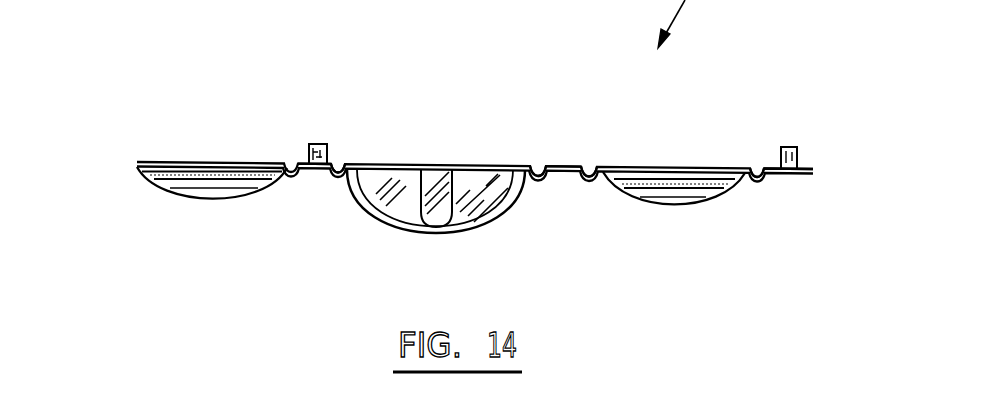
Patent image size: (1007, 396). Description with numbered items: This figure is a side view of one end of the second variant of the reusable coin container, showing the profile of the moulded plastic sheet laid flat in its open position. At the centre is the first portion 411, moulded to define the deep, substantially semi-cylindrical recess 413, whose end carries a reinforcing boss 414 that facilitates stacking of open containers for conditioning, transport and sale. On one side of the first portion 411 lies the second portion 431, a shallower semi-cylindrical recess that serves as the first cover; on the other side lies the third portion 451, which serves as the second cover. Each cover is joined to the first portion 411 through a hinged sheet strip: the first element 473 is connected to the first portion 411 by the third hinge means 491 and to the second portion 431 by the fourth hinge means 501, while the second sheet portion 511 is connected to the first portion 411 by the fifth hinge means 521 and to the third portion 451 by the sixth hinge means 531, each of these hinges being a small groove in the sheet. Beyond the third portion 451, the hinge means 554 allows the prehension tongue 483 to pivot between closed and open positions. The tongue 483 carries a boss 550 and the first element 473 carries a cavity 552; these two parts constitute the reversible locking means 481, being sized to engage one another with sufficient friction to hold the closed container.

The first portion 411 is at (488, 205).
The recess 413 is at (436, 172).
The reinforcing boss 414 is at (437, 218).
The second portion 431 is at (151, 176).
The third portion 451 is at (633, 177).
The first element 473 is at (317, 172).
The reversible locking means 481 is at (192, 187).
The prehension tongue 483 is at (820, 180).
The third hinge means 491 is at (342, 178).
The fourth hinge means 501 is at (293, 173).
The second sheet portion 511 is at (565, 177).
The fifth hinge means 521 is at (538, 167).
The sixth hinge means 531 is at (592, 167).
The boss 550 is at (790, 146).
The cavity 552 is at (318, 144).
The hinge means 554 is at (758, 181).